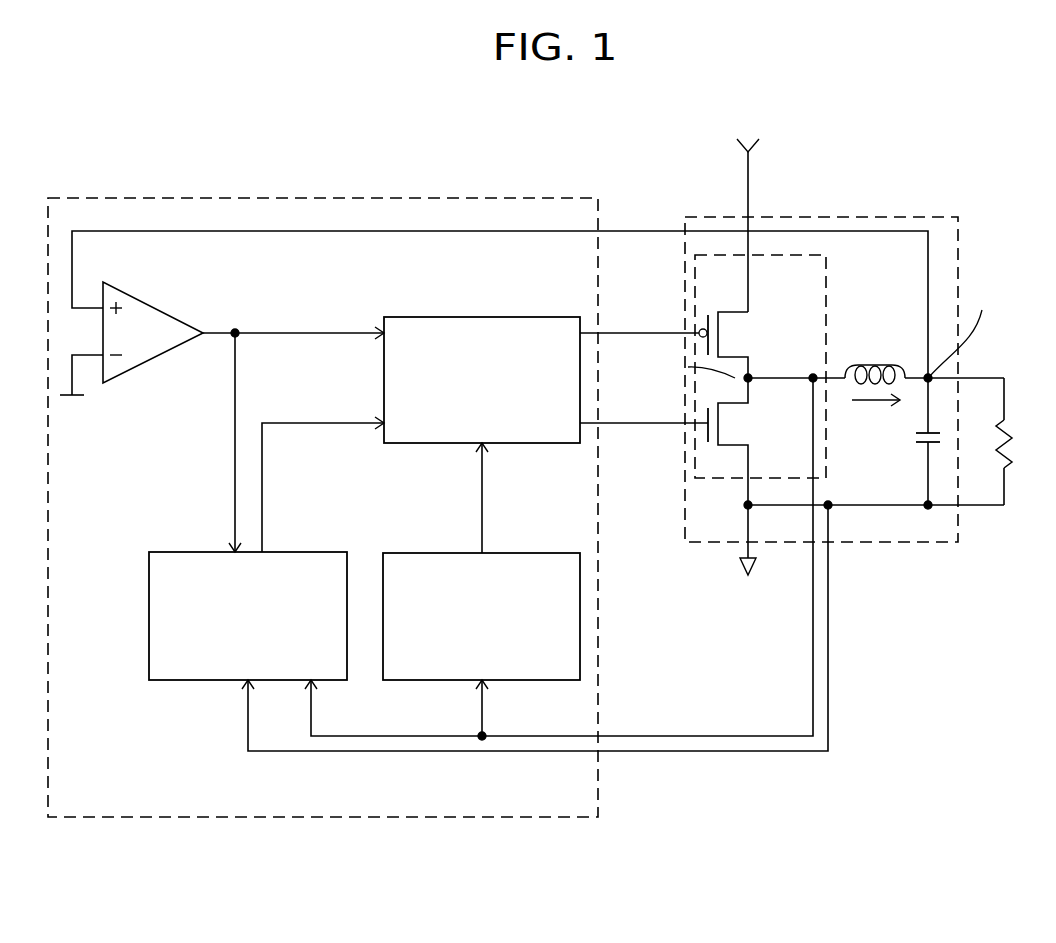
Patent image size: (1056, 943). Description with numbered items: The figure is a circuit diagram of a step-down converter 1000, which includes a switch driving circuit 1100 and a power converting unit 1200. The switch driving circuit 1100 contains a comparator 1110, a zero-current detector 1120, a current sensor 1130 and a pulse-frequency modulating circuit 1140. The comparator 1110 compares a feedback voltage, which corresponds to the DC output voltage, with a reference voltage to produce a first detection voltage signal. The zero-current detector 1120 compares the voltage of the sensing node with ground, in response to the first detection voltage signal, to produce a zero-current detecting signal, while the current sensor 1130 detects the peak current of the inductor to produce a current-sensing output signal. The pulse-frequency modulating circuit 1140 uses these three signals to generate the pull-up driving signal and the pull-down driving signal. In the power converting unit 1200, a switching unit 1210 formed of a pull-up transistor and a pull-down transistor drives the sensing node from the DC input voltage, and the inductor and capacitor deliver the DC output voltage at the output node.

The step-down converter 1000 is at (375, 168).
The switch driving circuit 1100 is at (560, 197).
The comparator 1110 is at (166, 312).
The zero-current detector 1120 is at (181, 551).
The current sensor 1130 is at (413, 552).
The pulse-frequency modulating circuit 1140 is at (533, 316).
The power converting unit 1200 is at (907, 216).
The switching unit 1210 is at (730, 254).